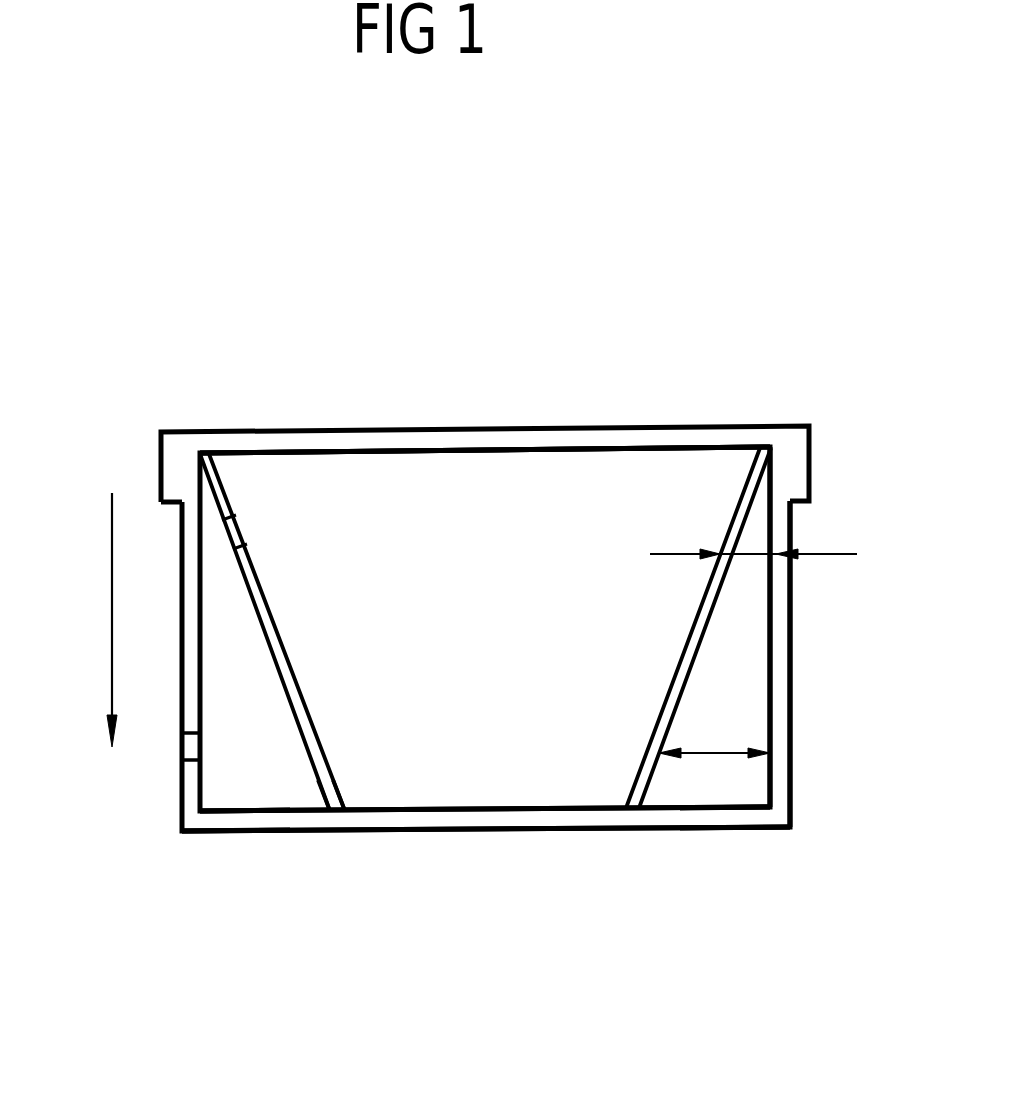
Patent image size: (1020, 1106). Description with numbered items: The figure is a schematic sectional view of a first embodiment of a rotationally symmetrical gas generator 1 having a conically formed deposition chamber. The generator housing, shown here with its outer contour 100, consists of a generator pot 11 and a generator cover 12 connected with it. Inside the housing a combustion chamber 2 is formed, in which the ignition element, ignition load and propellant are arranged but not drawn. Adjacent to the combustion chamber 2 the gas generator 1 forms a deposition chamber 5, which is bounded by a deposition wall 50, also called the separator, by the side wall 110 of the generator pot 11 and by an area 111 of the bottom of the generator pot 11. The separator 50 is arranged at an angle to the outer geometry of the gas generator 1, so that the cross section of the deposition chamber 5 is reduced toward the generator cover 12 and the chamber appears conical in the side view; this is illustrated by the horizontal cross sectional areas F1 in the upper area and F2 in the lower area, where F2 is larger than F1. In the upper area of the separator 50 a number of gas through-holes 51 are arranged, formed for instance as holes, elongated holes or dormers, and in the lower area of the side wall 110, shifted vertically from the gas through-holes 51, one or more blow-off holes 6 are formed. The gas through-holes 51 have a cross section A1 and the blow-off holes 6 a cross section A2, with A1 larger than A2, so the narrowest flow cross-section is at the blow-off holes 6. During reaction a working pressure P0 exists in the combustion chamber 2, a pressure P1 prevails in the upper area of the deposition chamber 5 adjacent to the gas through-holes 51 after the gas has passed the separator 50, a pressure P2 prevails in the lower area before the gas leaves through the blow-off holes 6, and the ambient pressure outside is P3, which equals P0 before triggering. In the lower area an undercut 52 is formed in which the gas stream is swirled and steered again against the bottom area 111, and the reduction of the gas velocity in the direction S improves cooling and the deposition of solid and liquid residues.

The gas generator 1 is at (335, 407).
The combustion chamber 2 is at (590, 477).
The deposition chamber 5 is at (750, 652).
The blow-off holes 6 is at (188, 748).
The generator pot 11 is at (477, 818).
The generator cover 12 is at (470, 437).
The deposition wall 50 is at (282, 653).
The gas through-holes 51 is at (245, 536).
The undercut 52 is at (290, 797).
The housing 100 is at (193, 548).
The side wall 110 is at (780, 688).
The area of the bottom of the generator pot 111 is at (257, 817).
The direction S is at (98, 620).
The cross sectional area F1 is at (756, 533).
The cross sectional area F2 is at (714, 733).
The cross section of the gas through-holes A1 is at (273, 512).
The cross section of the blow-off holes A2 is at (155, 742).
The working pressure P0 is at (476, 577).
The pressure P1 is at (225, 582).
The pressure P2 is at (254, 775).
The ambient pressure P3 is at (60, 792).